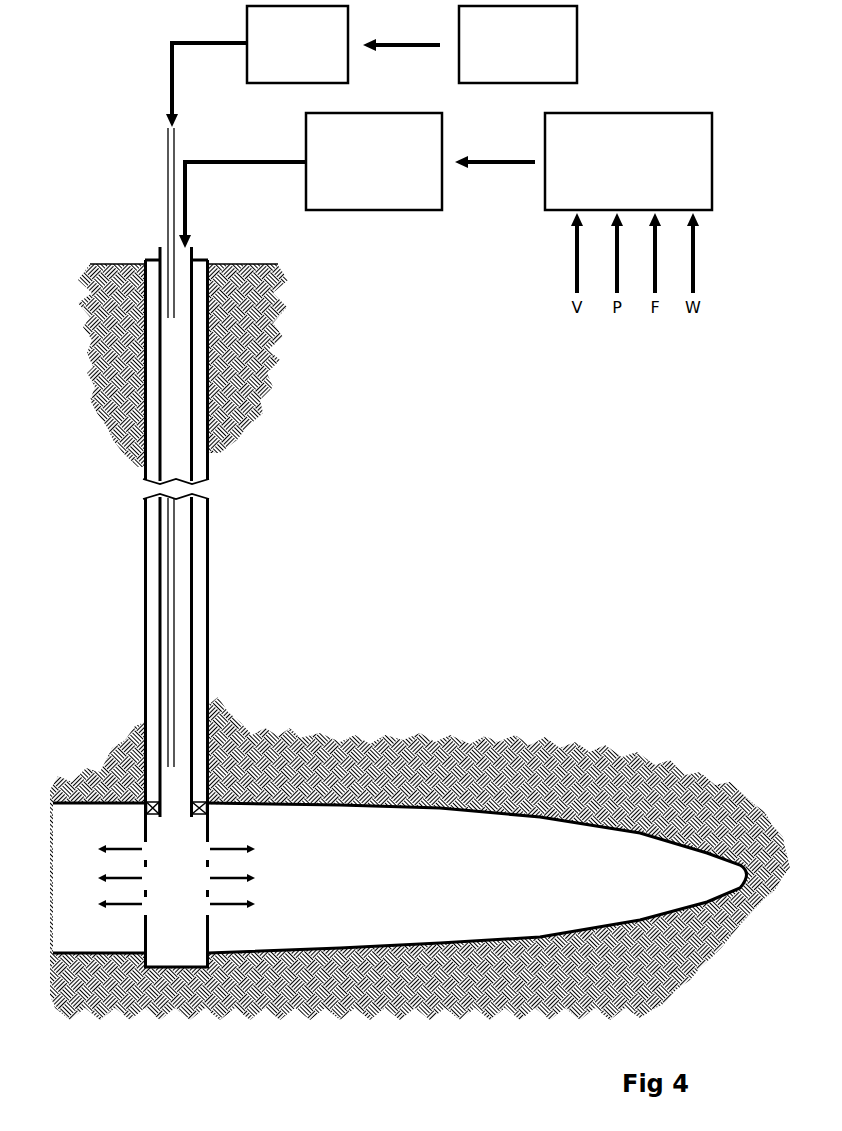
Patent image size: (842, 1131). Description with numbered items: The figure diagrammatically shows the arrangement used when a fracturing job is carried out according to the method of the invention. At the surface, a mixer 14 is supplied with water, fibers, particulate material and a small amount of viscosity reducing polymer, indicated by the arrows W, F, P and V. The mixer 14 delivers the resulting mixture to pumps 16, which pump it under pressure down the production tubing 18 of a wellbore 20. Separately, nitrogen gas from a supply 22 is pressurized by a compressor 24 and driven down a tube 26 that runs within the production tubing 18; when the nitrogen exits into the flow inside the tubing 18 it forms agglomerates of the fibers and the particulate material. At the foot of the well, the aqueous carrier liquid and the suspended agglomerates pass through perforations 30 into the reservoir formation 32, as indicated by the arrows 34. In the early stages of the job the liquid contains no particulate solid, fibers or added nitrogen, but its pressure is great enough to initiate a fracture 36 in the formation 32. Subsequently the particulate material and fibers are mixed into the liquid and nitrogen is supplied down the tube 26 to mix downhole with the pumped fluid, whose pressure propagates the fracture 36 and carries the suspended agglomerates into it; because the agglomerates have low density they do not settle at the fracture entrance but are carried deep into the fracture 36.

The mixer 14 is at (628, 161).
The pumps 16 is at (374, 161).
The production tubing 18 is at (193, 467).
The wellbore 20 is at (218, 585).
The nitrogen gas supply 22 is at (518, 44).
The compressor 24 is at (297, 44).
The tube 26 is at (168, 179).
The perforations 30 is at (212, 843).
The reservoir formation 32 is at (575, 777).
The arrows 34 is at (232, 875).
The fracture 36 is at (633, 877).